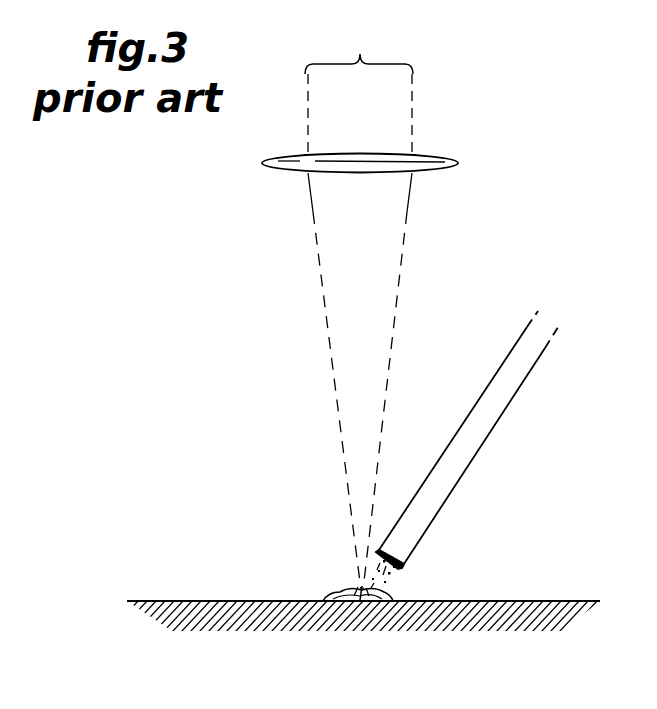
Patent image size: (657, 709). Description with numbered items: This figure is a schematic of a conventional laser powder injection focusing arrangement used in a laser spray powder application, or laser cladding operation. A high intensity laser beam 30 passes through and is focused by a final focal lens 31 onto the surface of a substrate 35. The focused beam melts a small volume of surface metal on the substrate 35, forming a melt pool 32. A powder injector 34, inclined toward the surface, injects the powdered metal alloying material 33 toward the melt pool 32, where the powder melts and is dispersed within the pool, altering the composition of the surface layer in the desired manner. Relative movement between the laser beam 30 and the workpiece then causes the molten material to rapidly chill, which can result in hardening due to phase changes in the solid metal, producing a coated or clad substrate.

The high intensity laser beam 30 is at (359, 306).
The final focal lens 31 is at (438, 155).
The melt pool 32 is at (340, 590).
The powdered metal alloying material 33 is at (378, 578).
The powder injector 34 is at (484, 420).
The substrate 35 is at (548, 601).